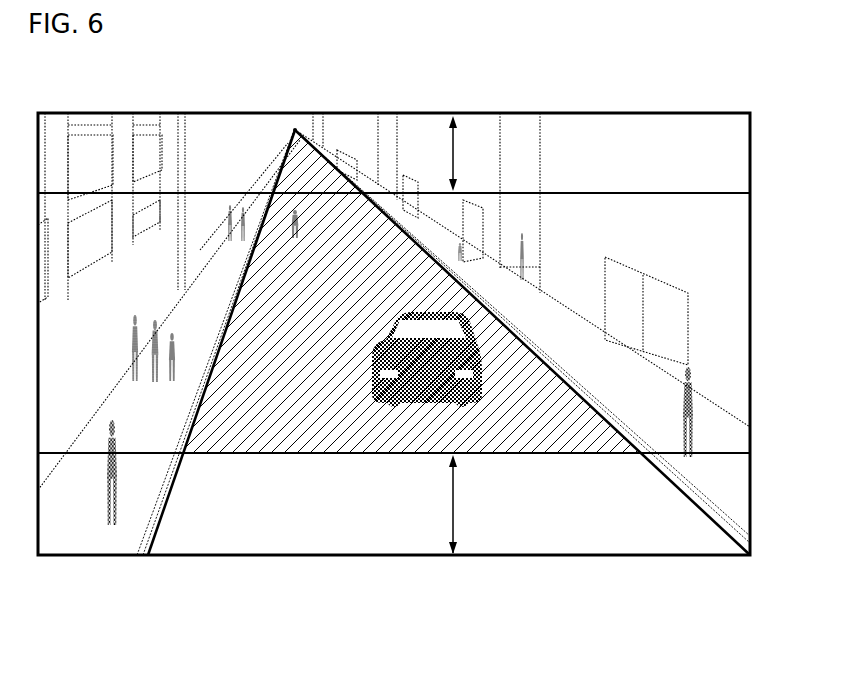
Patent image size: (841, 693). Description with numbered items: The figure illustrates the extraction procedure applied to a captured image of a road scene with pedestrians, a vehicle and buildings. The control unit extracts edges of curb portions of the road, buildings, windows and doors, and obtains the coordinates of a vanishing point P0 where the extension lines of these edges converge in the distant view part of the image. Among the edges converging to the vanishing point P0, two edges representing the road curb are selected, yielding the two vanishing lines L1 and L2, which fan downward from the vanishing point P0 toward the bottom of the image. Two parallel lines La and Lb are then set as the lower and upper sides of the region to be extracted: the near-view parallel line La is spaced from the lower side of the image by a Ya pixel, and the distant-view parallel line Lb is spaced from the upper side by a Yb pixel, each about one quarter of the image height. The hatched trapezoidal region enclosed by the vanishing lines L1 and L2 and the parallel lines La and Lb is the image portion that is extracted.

The vanishing point P0 is at (295, 130).
The parallel line Lb is at (590, 193).
The parallel line La is at (100, 473).
The vanishing line L1 is at (167, 507).
The vanishing line L2 is at (690, 500).
The Ya pixel Ya is at (468, 504).
The Yb pixel Yb is at (470, 153).